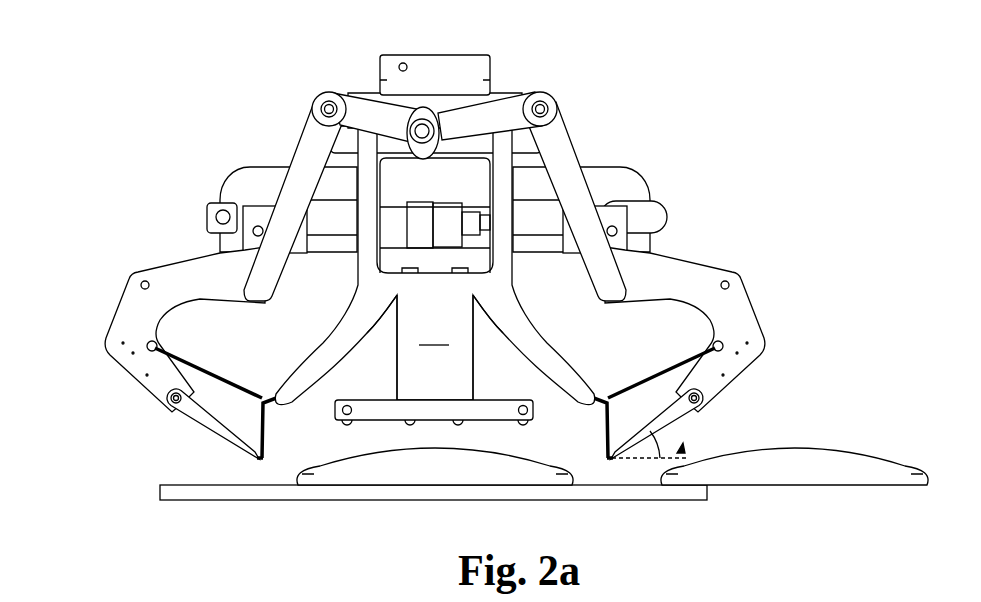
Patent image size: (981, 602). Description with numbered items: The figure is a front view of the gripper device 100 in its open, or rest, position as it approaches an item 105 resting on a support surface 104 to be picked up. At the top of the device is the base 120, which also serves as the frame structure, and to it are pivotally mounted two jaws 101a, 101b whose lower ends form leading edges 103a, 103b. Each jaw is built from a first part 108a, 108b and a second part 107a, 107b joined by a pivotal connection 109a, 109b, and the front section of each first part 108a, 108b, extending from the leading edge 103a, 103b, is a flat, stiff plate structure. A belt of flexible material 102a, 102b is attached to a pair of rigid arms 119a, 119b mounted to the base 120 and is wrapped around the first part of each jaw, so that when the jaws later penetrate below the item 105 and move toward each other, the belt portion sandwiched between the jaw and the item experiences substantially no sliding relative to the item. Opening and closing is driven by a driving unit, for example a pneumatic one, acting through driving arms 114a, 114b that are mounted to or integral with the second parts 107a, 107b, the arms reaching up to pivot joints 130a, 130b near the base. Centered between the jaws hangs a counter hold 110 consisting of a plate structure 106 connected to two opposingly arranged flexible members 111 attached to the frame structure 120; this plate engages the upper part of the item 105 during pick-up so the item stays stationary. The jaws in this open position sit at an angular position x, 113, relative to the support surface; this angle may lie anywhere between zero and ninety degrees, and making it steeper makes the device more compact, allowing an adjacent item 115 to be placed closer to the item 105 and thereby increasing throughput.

The gripper device 100 is at (136, 74).
The jaw 101a is at (200, 339).
The jaw 101b is at (684, 335).
The belt of flexible material 102a is at (210, 368).
The belt of flexible material 102b is at (660, 368).
The leading edge 103a is at (285, 457).
The leading edge 103b is at (581, 459).
The support surface 104 is at (222, 492).
The item 105 is at (377, 472).
The plate structure 106 is at (418, 406).
The second part 107a is at (133, 308).
The second part 107b is at (740, 346).
The first part 108a is at (218, 419).
The first part 108b is at (662, 422).
The pivotal connection 109a is at (170, 413).
The pivotal connection 109b is at (688, 415).
The counter hold 110 is at (494, 378).
The flexible members 111 is at (435, 347).
The angular position x 113 is at (688, 458).
The driving arm 114a is at (291, 186).
The driving arm 114b is at (567, 156).
The adjacent item 115 is at (853, 473).
The rigid arm 119a is at (361, 325).
The rigid arm 119b is at (509, 325).
The base 120 is at (468, 106).
The first pivot joint 130a is at (320, 107).
The second pivot joint 130b is at (547, 107).